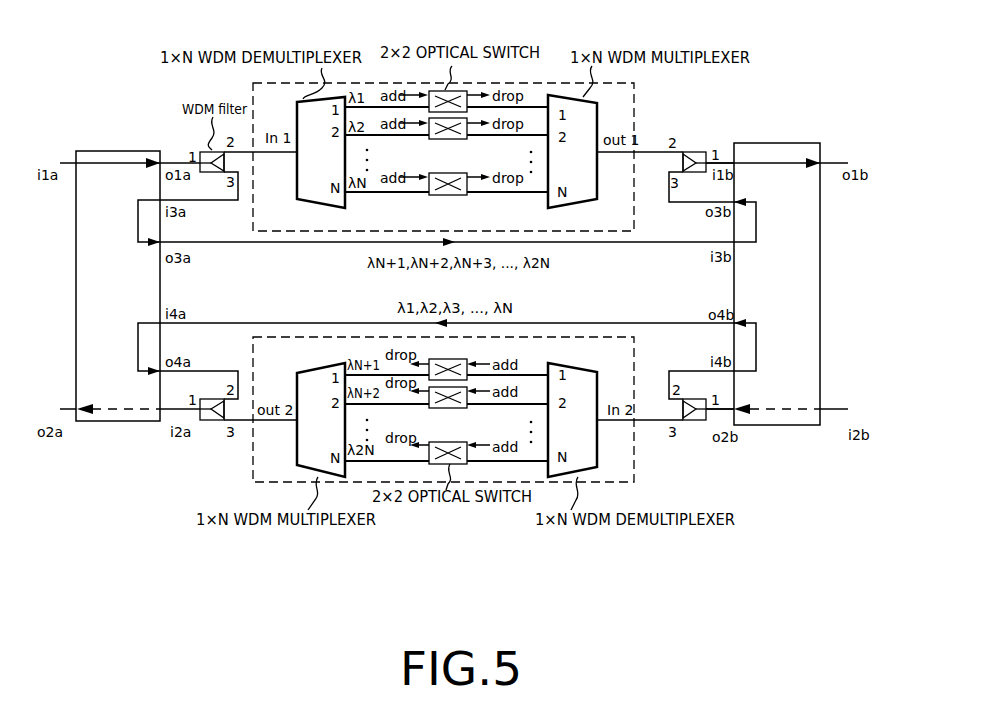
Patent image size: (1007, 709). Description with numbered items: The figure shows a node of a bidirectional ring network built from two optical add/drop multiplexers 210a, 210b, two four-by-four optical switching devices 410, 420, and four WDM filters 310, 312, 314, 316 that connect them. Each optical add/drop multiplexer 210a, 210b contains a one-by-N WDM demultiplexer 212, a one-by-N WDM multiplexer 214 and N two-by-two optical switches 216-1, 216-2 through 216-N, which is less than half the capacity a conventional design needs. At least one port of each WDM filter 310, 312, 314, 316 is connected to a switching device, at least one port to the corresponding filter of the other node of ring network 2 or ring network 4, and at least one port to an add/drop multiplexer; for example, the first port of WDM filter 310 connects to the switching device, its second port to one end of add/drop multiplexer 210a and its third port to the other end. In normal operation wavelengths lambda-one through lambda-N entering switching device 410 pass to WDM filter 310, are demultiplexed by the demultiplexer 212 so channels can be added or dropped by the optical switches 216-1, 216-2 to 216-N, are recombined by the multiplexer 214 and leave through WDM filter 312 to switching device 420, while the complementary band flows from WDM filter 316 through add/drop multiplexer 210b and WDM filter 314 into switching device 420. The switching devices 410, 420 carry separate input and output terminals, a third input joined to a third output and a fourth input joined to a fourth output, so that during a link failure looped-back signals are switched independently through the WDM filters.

The ring network 2 is at (723, 409).
The ring network 4 is at (722, 163).
The optical add/drop multiplexer 210a is at (634, 203).
The optical add/drop multiplexer 210b is at (634, 362).
The 1×N WDM demultiplexer 212 is at (321, 207).
The 1×N WDM multiplexer 214 is at (572, 207).
The 2×2 optical switch 216-1 is at (460, 91).
The 2×2 optical switch 216-2 is at (467, 138).
The 2×2 optical switch 216-N is at (467, 194).
The WDM filter 310 is at (212, 172).
The WDM filter 312 is at (700, 151).
The WDM filter 314 is at (213, 421).
The WDM filter 316 is at (690, 421).
The 4×4 optical switching device 410 is at (103, 421).
The 4×4 optical switching device 420 is at (785, 425).